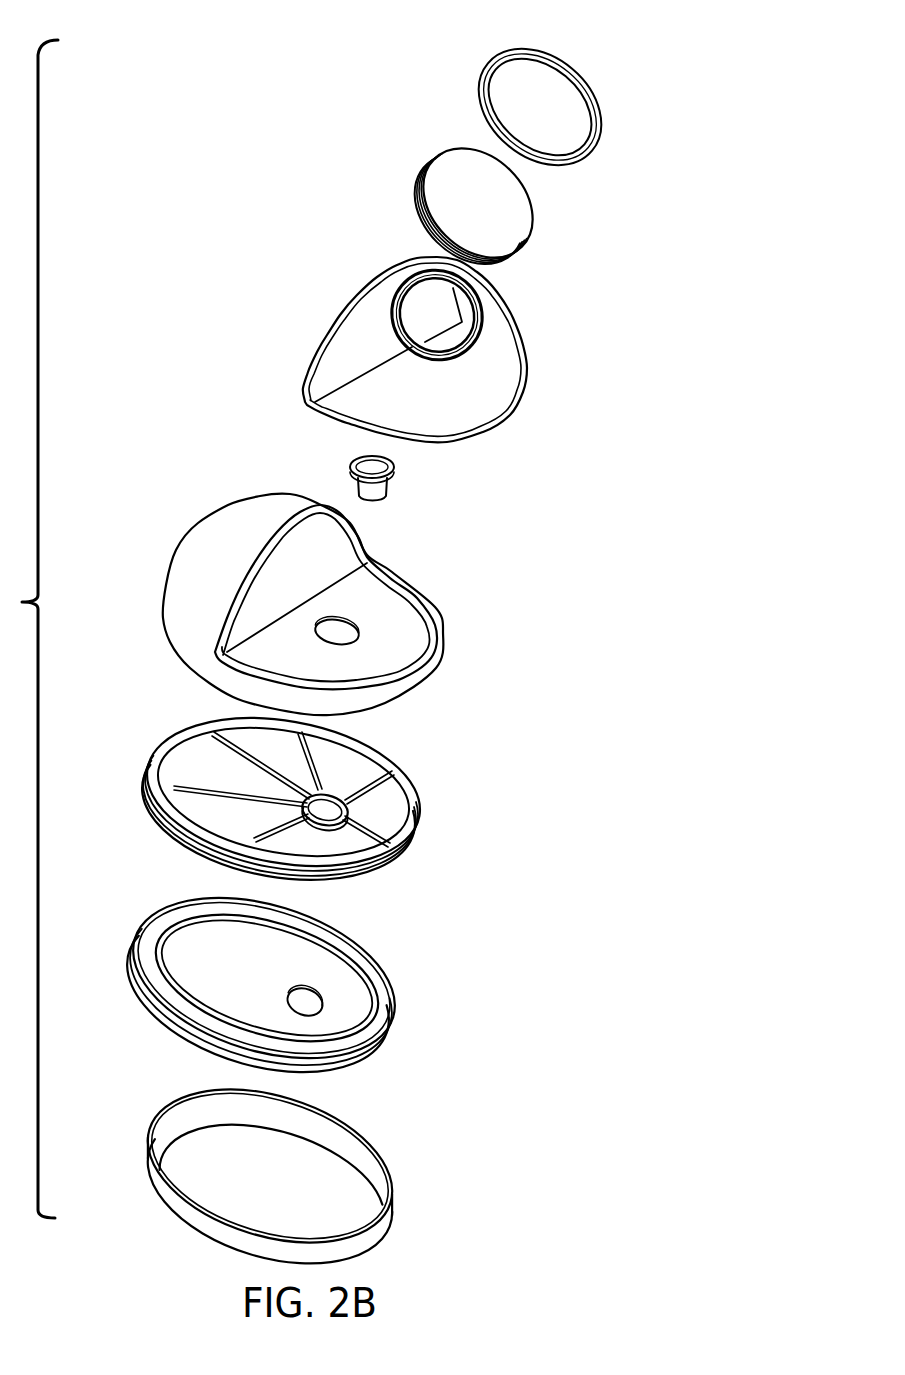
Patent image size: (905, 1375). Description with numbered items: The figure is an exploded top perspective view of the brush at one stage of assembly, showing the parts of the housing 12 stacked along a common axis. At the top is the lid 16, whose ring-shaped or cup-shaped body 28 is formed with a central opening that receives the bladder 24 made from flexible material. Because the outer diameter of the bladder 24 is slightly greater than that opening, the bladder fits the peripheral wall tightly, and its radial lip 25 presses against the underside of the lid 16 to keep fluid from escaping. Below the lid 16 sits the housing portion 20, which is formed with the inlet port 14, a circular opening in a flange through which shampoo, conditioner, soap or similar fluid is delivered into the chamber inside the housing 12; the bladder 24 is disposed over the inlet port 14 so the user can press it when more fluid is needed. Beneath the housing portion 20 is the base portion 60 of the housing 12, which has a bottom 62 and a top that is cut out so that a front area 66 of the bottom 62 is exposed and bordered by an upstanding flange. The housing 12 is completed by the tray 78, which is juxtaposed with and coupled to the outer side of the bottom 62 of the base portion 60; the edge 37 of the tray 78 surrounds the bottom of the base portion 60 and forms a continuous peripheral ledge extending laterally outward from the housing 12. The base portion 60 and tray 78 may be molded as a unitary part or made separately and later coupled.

The housing 12 is at (445, 329).
The inlet port 14 is at (417, 295).
The lid 16 is at (542, 150).
The housing portion 20 is at (332, 344).
The bladder 24 is at (519, 212).
The radial lip 25 is at (512, 250).
The cup-shaped body 28 is at (578, 78).
The edge 37 is at (393, 848).
The base portion 60 is at (321, 605).
The bottom 62 is at (417, 637).
The front area 66 is at (425, 598).
The tray 78 is at (295, 792).